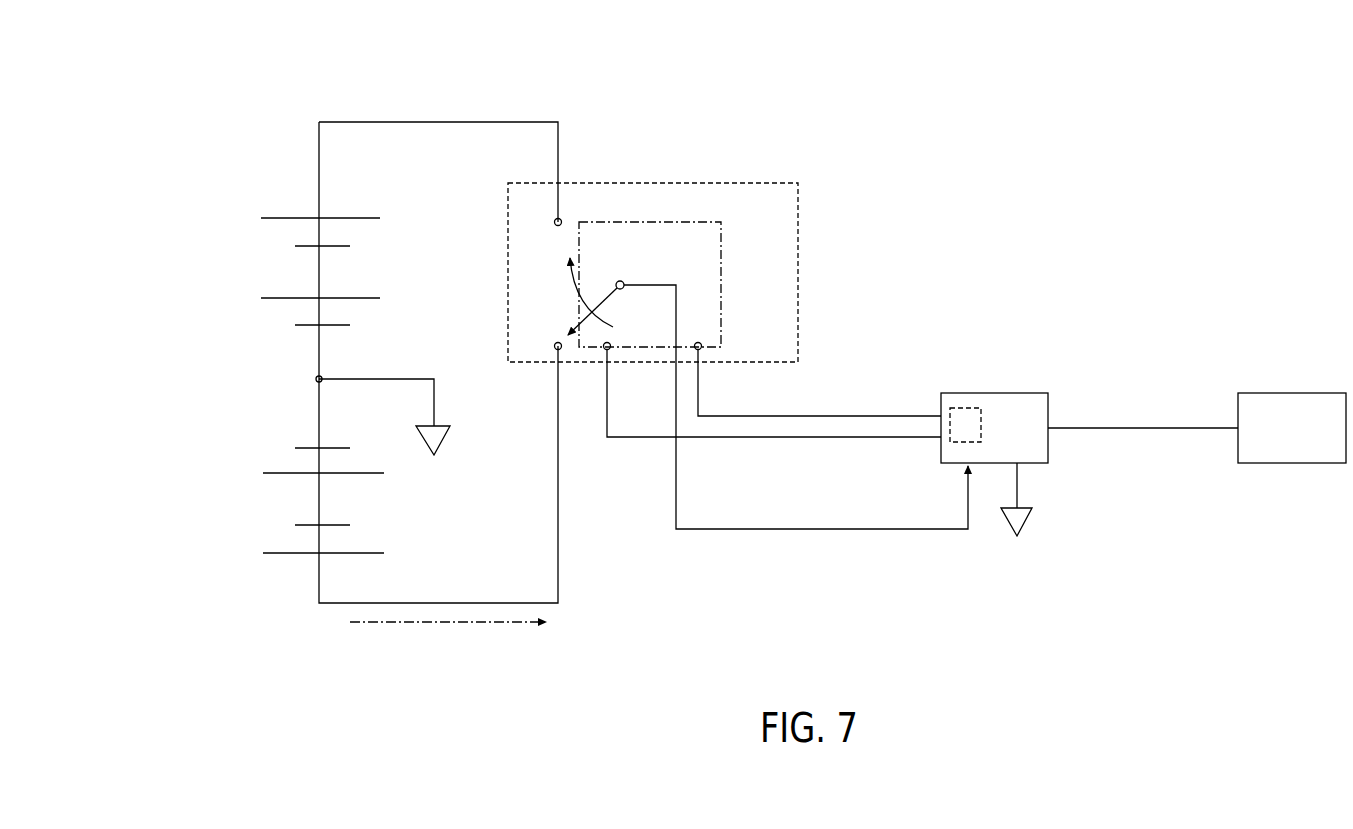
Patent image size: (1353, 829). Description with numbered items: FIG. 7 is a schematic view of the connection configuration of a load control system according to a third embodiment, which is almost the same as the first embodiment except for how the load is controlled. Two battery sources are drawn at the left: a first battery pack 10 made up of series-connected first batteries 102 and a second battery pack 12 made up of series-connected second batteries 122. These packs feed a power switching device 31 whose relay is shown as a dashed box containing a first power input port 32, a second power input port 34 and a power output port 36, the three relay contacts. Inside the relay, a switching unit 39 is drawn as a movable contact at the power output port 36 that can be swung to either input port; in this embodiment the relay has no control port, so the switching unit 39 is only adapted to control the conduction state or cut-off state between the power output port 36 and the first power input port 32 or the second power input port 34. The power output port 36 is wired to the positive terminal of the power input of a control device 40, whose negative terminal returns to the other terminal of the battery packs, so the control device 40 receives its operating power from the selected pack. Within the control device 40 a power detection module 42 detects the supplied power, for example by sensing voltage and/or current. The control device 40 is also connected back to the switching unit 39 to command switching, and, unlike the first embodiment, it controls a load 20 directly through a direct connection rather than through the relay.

The first battery pack 10 is at (437, 372).
The second battery pack 12 is at (480, 509).
The first battery 102 is at (262, 247).
The second battery 122 is at (262, 454).
The load 20 is at (1293, 390).
The power switching device 31 is at (655, 178).
The first power input port 32 is at (559, 218).
The second power input port 34 is at (555, 347).
The power output port 36 is at (624, 287).
The switching unit 39 is at (652, 216).
The control device 40 is at (1054, 446).
The power detection module 42 is at (977, 418).